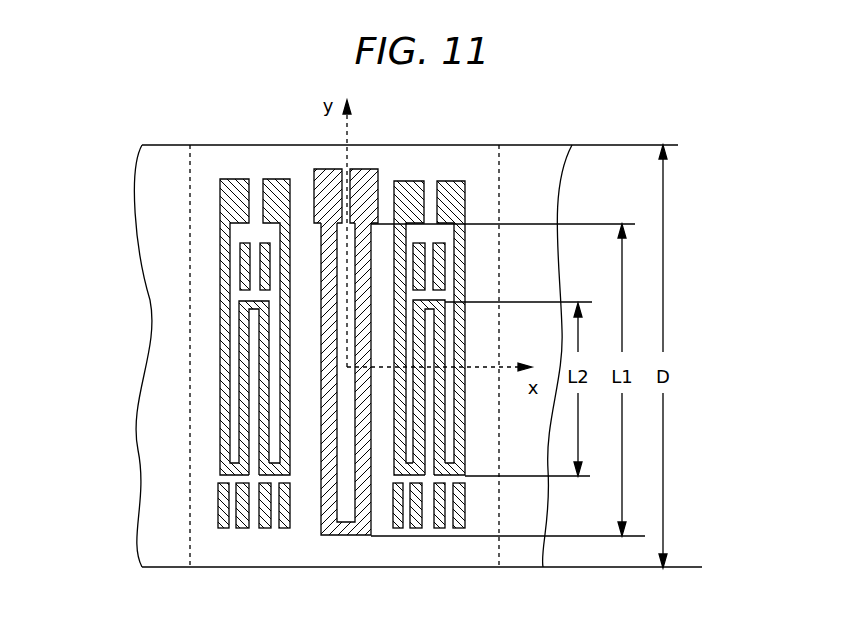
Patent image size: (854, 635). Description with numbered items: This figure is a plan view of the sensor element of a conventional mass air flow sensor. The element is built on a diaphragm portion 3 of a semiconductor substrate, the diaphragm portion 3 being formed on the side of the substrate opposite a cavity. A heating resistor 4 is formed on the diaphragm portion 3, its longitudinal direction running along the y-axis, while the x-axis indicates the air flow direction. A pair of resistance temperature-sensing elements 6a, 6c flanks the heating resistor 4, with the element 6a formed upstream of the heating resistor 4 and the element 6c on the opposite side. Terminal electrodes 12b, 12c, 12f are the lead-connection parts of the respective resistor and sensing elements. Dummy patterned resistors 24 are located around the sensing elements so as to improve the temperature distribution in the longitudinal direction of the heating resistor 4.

The diaphragm portion 3 is at (190, 172).
The heating resistor 4 is at (329, 522).
The resistance temperature-sensing element 6a is at (221, 375).
The resistance temperature-sensing element 6c is at (457, 448).
The terminal electrode 12b is at (270, 190).
The terminal electrode 12c is at (338, 180).
The terminal electrode 12f is at (410, 186).
The dummy patterned resistors 24 is at (244, 255).